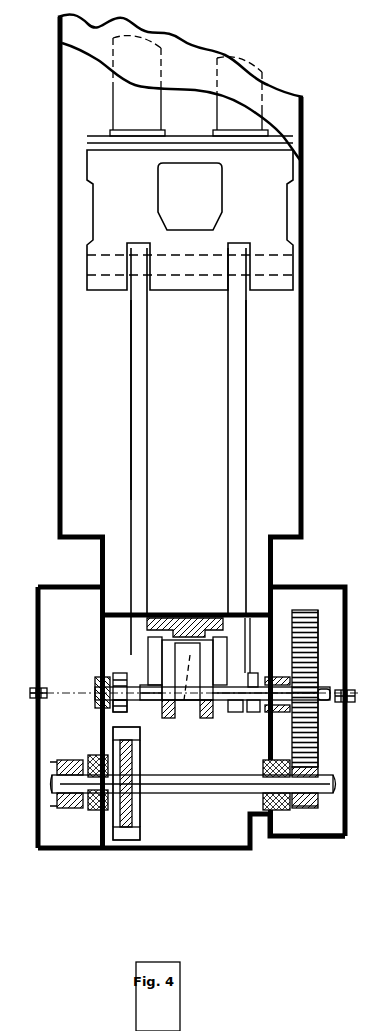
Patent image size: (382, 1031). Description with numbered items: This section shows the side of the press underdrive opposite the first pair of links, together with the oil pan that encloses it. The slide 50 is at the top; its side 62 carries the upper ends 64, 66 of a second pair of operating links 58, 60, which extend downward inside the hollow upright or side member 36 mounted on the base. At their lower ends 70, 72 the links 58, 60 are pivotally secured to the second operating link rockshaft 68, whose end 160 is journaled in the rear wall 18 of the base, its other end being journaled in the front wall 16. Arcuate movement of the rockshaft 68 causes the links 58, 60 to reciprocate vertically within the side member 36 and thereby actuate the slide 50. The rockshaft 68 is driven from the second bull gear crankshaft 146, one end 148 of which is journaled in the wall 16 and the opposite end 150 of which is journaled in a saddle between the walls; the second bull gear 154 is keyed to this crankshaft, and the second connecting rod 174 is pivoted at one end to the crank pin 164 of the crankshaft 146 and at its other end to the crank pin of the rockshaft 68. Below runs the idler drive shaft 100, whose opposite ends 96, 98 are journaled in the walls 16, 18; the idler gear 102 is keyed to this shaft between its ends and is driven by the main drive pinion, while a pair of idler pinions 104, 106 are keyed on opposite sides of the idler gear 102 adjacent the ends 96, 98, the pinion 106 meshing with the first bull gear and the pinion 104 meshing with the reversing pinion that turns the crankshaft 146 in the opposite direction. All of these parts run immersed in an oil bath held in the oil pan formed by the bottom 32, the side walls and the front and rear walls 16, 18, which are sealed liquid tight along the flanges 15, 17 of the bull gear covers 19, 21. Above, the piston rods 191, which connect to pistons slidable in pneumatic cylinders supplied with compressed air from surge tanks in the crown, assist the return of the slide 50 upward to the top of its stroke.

The flange 15 is at (32, 700).
The front wall 16 is at (273, 568).
The flange 17 is at (33, 690).
The rear wall 18 is at (100, 567).
The bull gear cover 19 is at (328, 618).
The bull gear cover 21 is at (46, 631).
The bottom 32 is at (334, 829).
The side member 36 is at (301, 462).
The slide 50 is at (285, 217).
The operating link 58 is at (248, 423).
The operating link 60 is at (128, 413).
The opposite side of the slide 62 is at (222, 206).
The upper end 64 is at (248, 322).
The upper end 66 is at (137, 303).
The operating link rockshaft 68 is at (112, 692).
The lower end 70 is at (232, 710).
The lower end 72 is at (134, 712).
The end of idler drive shaft 96 is at (334, 785).
The opposite end of idler drive shaft 98 is at (45, 782).
The idler drive shaft 100 is at (262, 796).
The idler gear 102 is at (134, 757).
The idler pinion 104 is at (296, 811).
The idler pinion 106 is at (68, 808).
The second bull gear crankshaft 146 is at (238, 686).
The end of second bull gear crankshaft 148 is at (281, 690).
The opposite end of second bull gear crankshaft 150 is at (152, 690).
The second bull gear 154 is at (318, 646).
The end of rockshaft 160 is at (97, 698).
The crank pin 164 is at (194, 668).
The second connecting rod 174 is at (186, 719).
The piston rods 191 is at (219, 115).